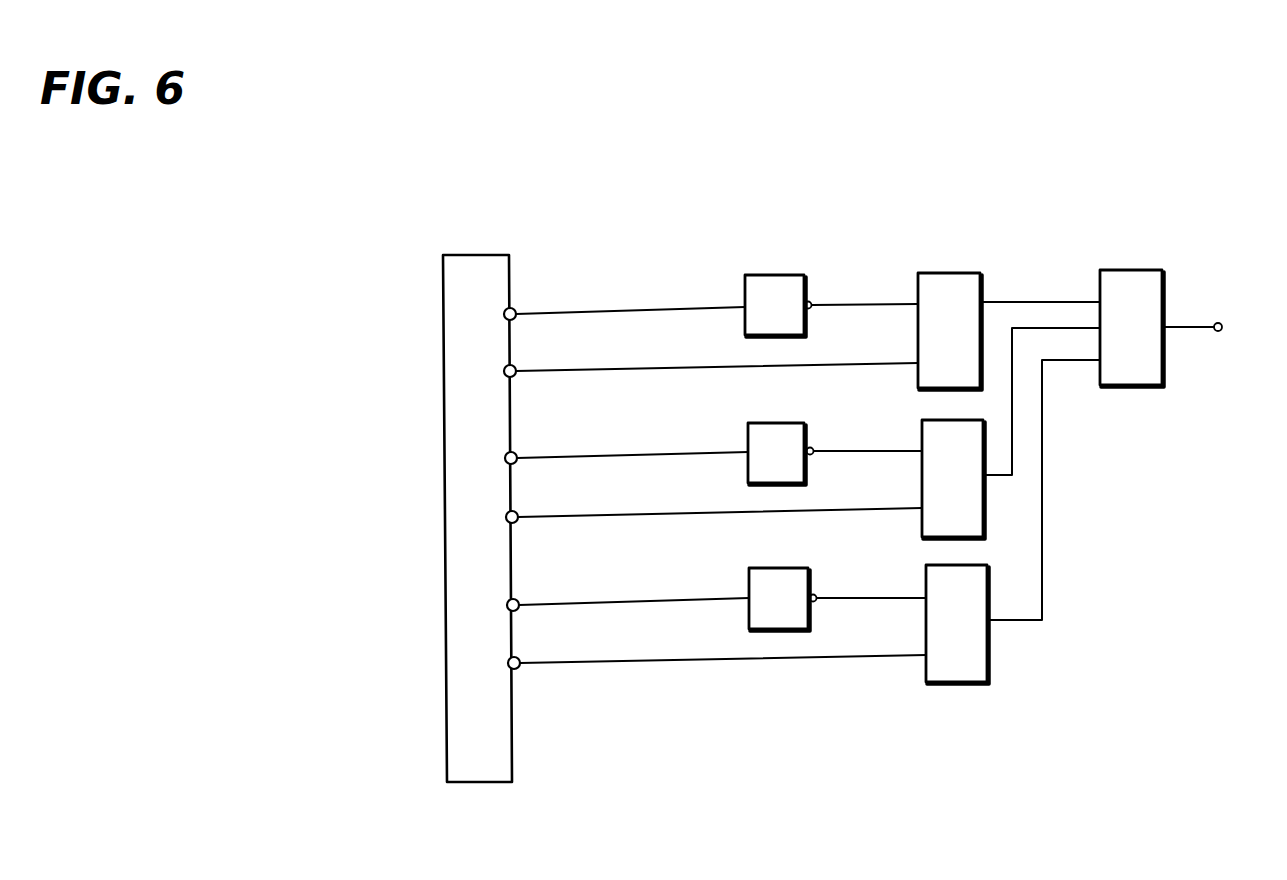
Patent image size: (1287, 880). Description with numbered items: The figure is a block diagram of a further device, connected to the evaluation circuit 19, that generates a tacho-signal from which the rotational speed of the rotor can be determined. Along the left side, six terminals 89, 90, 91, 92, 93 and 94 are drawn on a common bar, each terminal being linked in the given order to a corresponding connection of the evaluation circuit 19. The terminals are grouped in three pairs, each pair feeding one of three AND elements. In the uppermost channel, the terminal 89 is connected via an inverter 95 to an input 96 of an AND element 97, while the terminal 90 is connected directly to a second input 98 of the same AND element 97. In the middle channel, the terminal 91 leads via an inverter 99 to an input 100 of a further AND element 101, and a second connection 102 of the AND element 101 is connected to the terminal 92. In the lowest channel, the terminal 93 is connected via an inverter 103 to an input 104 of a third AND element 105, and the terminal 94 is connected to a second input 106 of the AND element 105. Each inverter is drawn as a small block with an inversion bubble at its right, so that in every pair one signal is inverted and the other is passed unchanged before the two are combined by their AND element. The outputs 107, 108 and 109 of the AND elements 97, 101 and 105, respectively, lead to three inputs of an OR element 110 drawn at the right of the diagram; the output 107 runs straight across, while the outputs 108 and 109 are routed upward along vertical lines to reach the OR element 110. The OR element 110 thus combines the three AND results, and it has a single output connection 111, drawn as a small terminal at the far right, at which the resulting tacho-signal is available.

The evaluation circuit 19 is at (658, 255).
The terminal 89 is at (513, 308).
The terminal 90 is at (513, 365).
The terminal 91 is at (514, 452).
The terminal 92 is at (515, 511).
The terminal 93 is at (516, 599).
The terminal 94 is at (517, 657).
The inverter 95 is at (786, 282).
The input 96 is at (882, 304).
The AND element 97 is at (948, 284).
The second input 98 is at (868, 364).
The inverter 99 is at (787, 436).
The input 100 is at (886, 451).
The AND element 101 is at (975, 503).
The second connection 102 is at (873, 509).
The inverter 103 is at (799, 585).
The input 104 is at (906, 570).
The AND element 105 is at (966, 672).
The second input 106 is at (884, 656).
The output 107 is at (1018, 302).
The output 108 is at (1000, 472).
The output 109 is at (1006, 618).
The OR element 110 is at (1124, 278).
The output connection 111 is at (1222, 325).